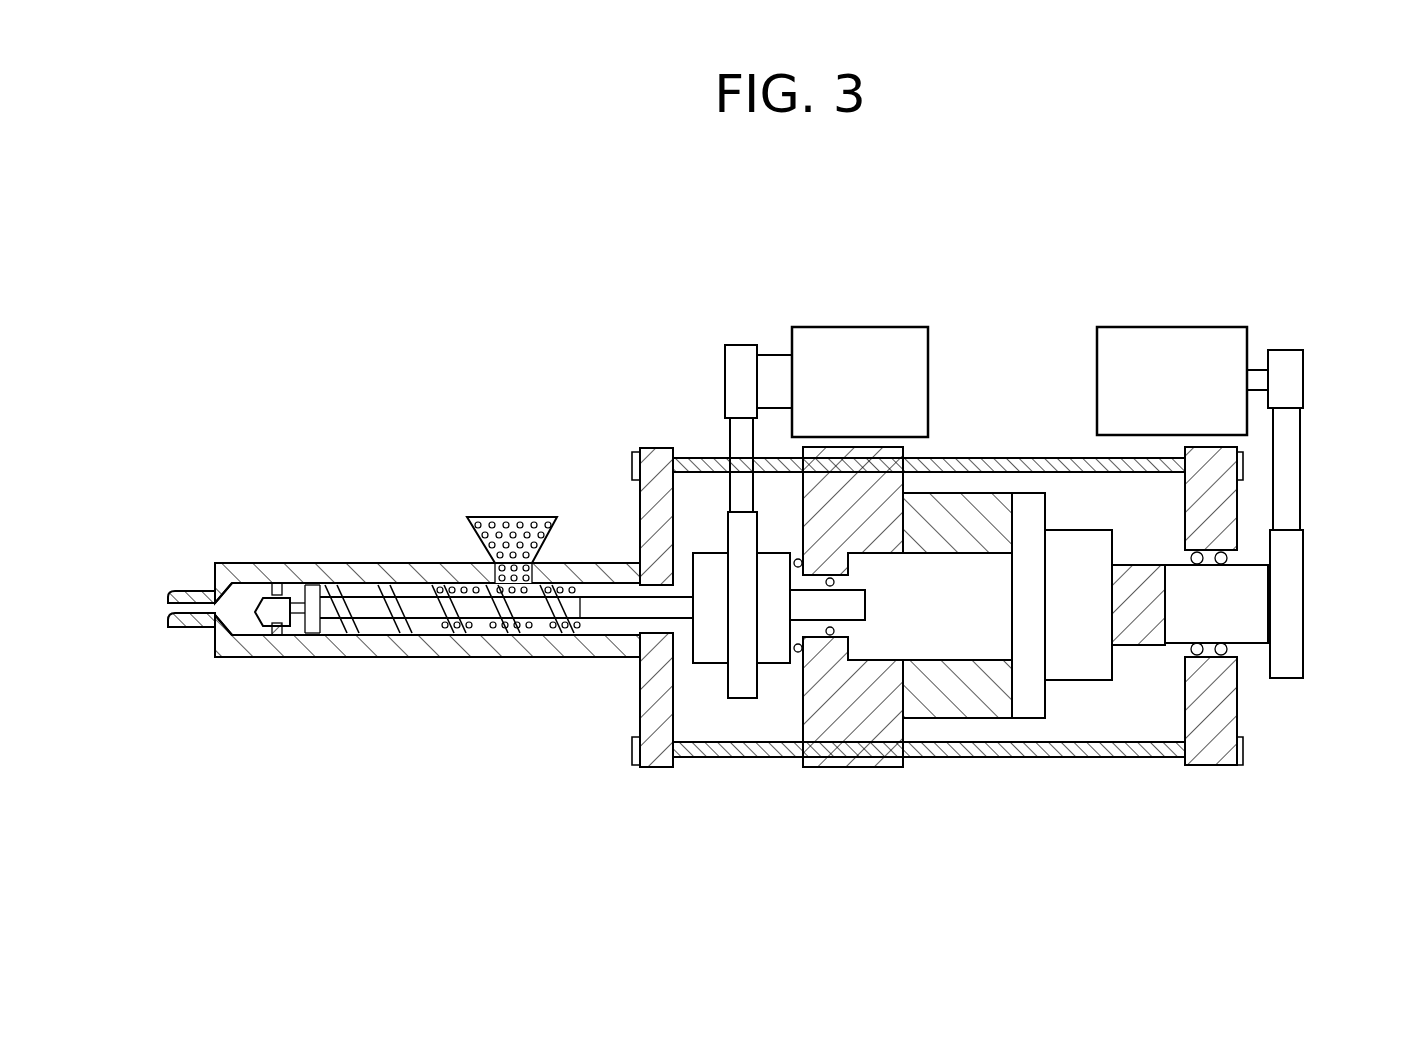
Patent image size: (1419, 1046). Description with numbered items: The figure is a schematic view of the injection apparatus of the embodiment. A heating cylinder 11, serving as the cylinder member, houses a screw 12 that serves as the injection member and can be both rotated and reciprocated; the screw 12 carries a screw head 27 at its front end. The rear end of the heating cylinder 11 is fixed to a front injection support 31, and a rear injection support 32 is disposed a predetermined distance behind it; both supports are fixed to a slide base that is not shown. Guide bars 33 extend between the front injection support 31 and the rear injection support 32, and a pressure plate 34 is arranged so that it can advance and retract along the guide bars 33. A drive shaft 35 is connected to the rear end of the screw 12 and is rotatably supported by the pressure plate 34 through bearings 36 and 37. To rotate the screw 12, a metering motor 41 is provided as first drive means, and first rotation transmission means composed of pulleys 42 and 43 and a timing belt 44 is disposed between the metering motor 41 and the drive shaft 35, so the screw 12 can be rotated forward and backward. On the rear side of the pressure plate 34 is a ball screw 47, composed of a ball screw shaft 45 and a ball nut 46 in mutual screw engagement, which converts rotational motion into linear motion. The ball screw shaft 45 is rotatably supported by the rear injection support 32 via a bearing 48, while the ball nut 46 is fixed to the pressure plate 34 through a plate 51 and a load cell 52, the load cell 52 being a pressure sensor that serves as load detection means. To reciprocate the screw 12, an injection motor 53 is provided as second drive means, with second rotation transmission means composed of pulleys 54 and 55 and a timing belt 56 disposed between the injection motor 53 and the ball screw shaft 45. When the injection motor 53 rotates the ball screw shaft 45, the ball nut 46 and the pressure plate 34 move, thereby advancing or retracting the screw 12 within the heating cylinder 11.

The heating cylinder 11 is at (410, 570).
The screw 12 is at (396, 777).
The screw head 27 is at (250, 605).
The front injection support 31 is at (640, 700).
The rear injection support 32 is at (1225, 760).
The guide bars 33 is at (1010, 468).
The pressure plate 34 is at (866, 509).
The drive shaft 35 is at (686, 600).
The bearing 36 is at (835, 584).
The bearing 37 is at (800, 655).
The metering motor 41 is at (858, 333).
The pulley 42 is at (740, 350).
The pulley 43 is at (743, 697).
The timing belt 44 is at (738, 440).
The ball screw shaft 45 is at (1130, 645).
The ball nut 46 is at (1072, 672).
The ball screw 47 is at (1060, 829).
The bearing 48 is at (1226, 650).
The plate 51 is at (1033, 500).
The load cell 52 is at (958, 712).
The injection motor 53 is at (1160, 333).
The pulley 54 is at (1300, 386).
The pulley 55 is at (1298, 600).
The timing belt 56 is at (1295, 497).